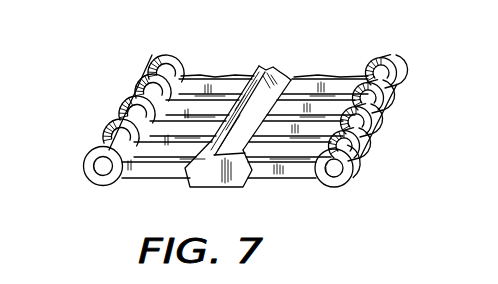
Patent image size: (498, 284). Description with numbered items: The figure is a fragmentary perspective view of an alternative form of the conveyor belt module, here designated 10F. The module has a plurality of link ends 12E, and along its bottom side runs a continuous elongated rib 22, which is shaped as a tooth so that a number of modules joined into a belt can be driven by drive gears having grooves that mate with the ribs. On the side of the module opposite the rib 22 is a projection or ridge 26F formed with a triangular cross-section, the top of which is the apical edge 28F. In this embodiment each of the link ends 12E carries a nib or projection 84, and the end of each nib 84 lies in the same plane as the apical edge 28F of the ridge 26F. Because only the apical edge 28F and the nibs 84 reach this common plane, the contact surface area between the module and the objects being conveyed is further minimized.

The rack assembly 10F is at (228, 64).
The apical edge 28F is at (256, 71).
The ridge 26F is at (267, 96).
The nib 84 is at (104, 140).
The rib 22 is at (212, 181).
The link ends 12E is at (354, 170).